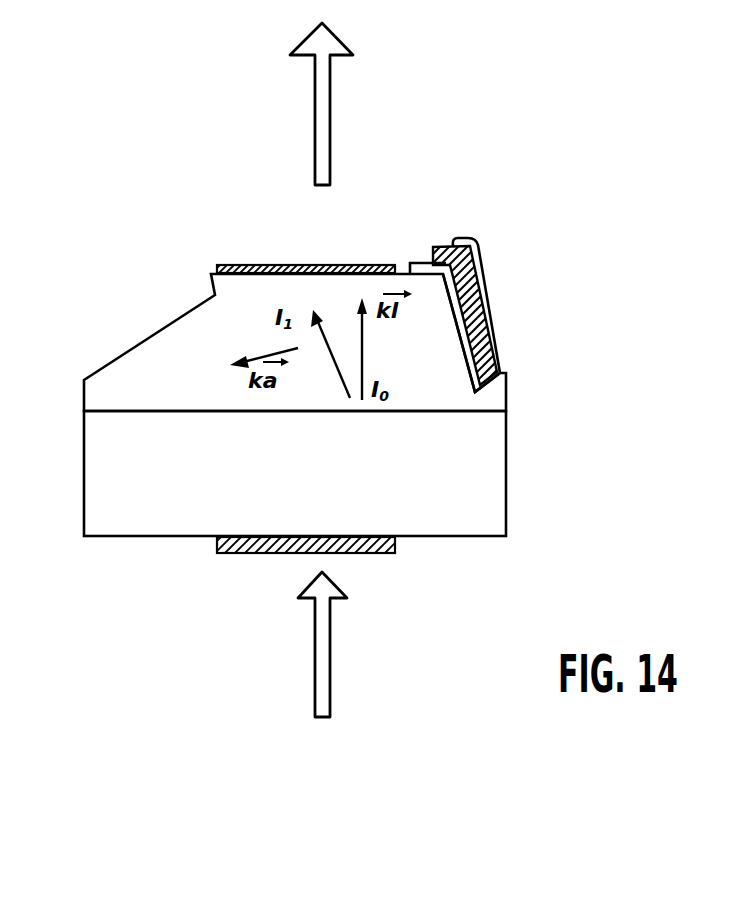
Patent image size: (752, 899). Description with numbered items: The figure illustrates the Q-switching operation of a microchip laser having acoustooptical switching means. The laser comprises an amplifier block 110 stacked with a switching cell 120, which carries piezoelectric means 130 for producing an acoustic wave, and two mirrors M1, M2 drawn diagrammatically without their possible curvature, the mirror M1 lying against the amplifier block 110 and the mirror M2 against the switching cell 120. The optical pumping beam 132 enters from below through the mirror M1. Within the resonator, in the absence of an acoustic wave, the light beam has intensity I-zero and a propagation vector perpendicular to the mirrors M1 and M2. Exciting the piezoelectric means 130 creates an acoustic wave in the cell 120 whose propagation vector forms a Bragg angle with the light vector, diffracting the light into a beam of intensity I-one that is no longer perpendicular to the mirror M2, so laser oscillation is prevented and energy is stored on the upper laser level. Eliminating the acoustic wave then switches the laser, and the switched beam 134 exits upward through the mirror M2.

The amplifier block 110 is at (543, 412).
The switching cell 120 is at (543, 277).
The piezoelectric means 130 is at (480, 297).
The optical pumping beam 132 is at (323, 637).
The switched beam 134 is at (323, 112).
The mirror M1 is at (242, 553).
The mirror M2 is at (240, 266).